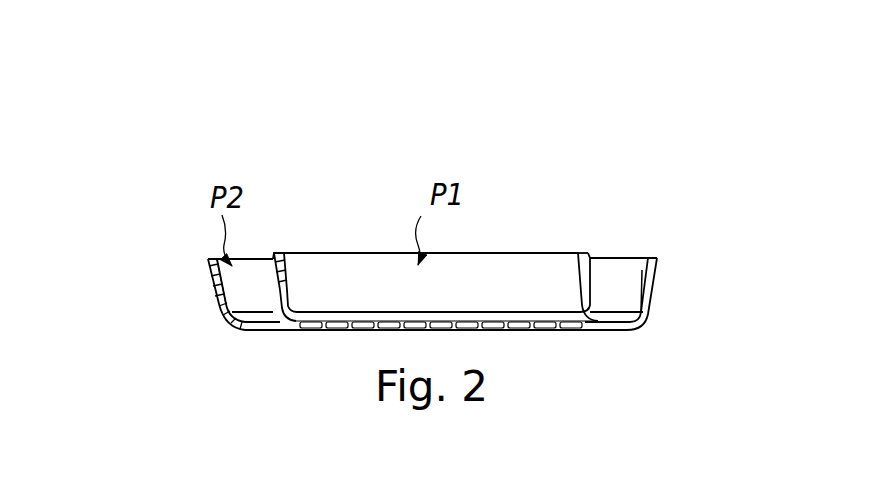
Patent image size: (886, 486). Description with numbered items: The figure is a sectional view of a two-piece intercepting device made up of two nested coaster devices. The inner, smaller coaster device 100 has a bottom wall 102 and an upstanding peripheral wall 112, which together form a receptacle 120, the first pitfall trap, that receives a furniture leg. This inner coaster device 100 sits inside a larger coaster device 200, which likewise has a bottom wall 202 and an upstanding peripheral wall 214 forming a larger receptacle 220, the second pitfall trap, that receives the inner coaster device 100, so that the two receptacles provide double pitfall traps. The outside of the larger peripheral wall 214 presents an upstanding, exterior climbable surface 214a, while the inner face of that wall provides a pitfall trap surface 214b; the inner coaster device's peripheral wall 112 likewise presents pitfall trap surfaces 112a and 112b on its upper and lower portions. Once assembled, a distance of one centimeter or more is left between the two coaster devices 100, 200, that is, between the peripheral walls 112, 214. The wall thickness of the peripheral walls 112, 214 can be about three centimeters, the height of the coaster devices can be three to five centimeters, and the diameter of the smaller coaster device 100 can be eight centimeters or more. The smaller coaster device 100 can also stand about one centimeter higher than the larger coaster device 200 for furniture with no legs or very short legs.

The inner coaster device 100 is at (527, 248).
The bottom wall 102 is at (472, 320).
The upstanding peripheral wall 112 is at (590, 285).
The pitfall trap surface 112a is at (295, 260).
The pitfall trap surface 112b is at (270, 297).
The receptacle 120 is at (380, 280).
The larger coaster device 200 is at (387, 286).
The bottom wall 202 is at (250, 333).
The upstanding peripheral wall 214 is at (213, 300).
The exterior climbable surface 214a is at (645, 282).
The pitfall trap surface 214b is at (628, 292).
The larger receptacle 220 is at (253, 288).